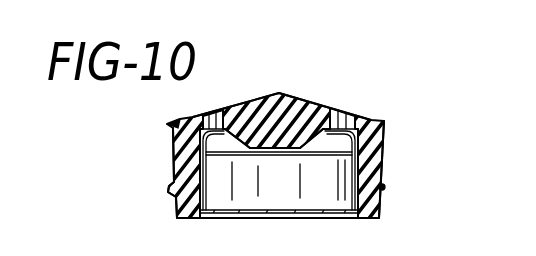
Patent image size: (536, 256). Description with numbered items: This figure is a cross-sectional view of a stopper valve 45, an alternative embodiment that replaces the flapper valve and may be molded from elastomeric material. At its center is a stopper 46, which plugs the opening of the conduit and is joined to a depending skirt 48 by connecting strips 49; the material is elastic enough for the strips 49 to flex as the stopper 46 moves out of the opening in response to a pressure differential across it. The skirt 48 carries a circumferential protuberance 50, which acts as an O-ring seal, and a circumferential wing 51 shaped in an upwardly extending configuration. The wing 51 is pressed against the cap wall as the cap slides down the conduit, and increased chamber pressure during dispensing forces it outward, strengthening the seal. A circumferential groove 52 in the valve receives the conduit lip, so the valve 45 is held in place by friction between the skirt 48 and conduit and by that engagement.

The stopper valve 45 is at (386, 126).
The central stopper 46 is at (300, 106).
The depending skirt 48 is at (386, 187).
The connecting strips 49 is at (213, 112).
The circumferential protuberance 50 is at (170, 188).
The circumferential wing 51 is at (169, 126).
The circumferential groove 52 is at (199, 150).